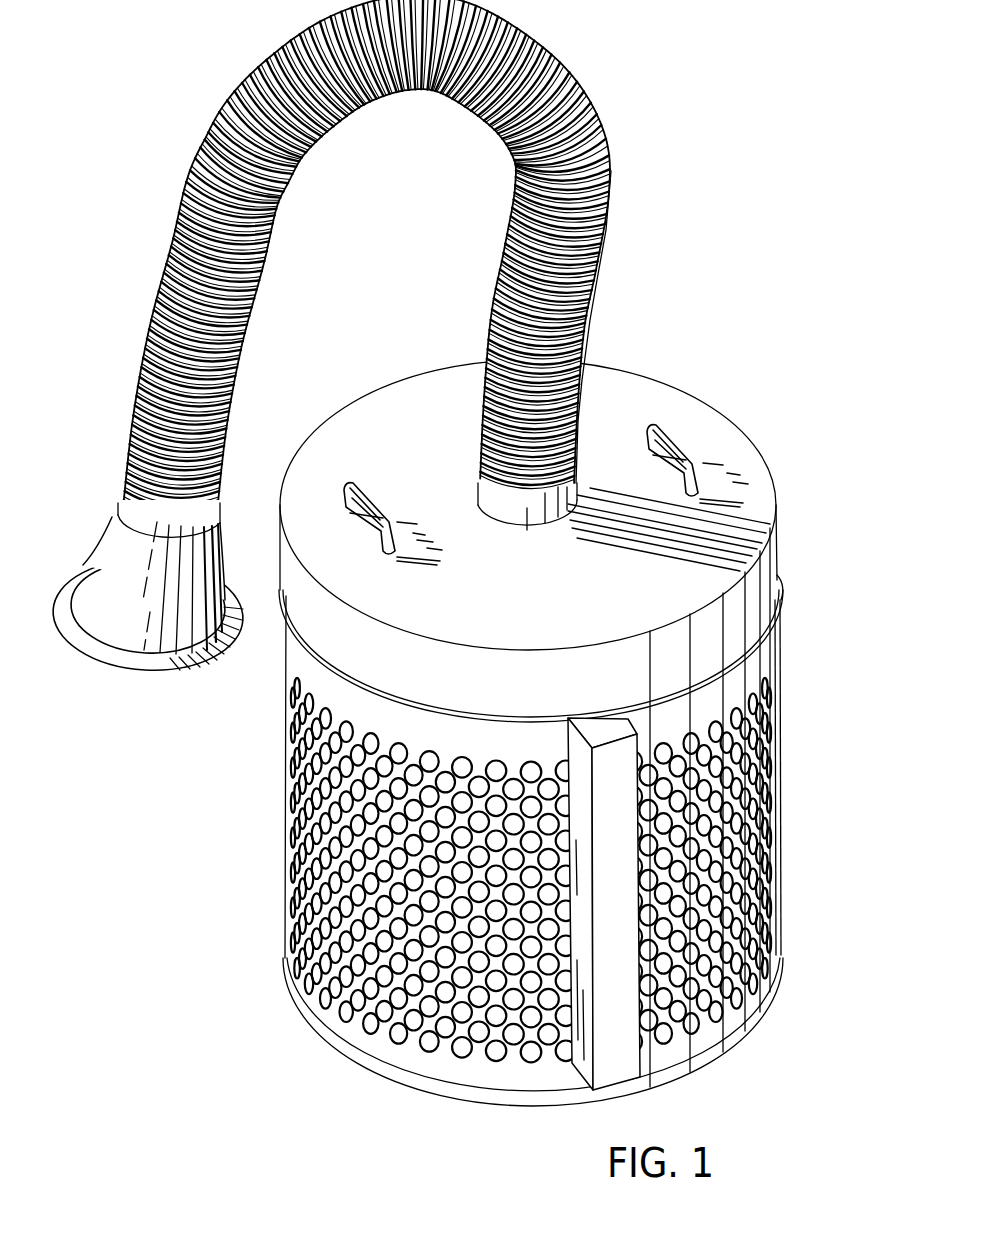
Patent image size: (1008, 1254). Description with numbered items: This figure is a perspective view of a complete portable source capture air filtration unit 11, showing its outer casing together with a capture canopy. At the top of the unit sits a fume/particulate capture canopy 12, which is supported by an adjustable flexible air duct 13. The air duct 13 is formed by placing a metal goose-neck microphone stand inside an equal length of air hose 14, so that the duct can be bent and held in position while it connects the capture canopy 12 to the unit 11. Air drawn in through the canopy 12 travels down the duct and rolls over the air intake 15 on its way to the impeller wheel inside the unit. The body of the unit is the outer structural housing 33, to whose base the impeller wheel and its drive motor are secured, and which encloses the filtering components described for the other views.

The portable source capture air filtration unit 11 is at (255, 826).
The fume/particulate capture canopy 12 is at (158, 672).
The adjustable flexible air duct 13 is at (434, 258).
The air hose 14 is at (593, 280).
The air intake 15 is at (578, 488).
The outer structural housing 33 is at (780, 847).